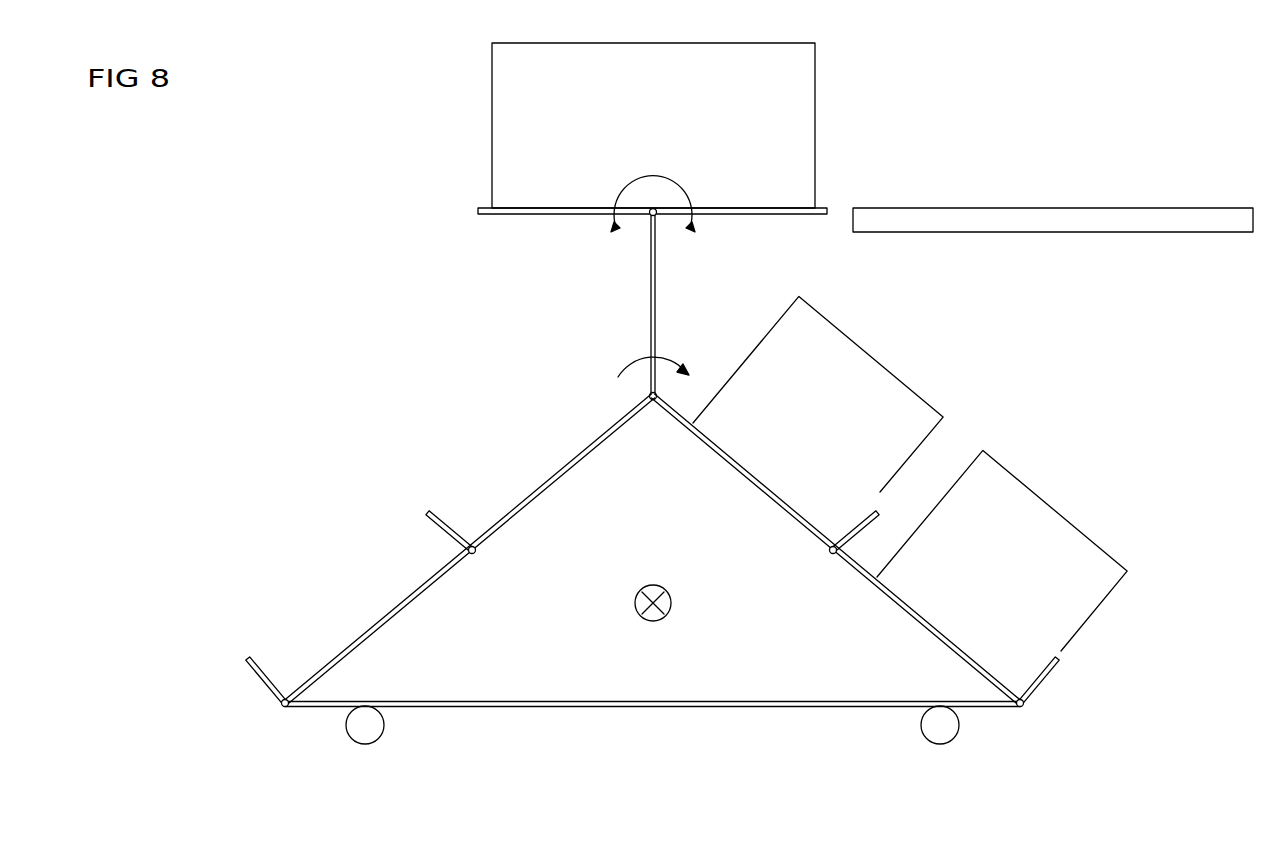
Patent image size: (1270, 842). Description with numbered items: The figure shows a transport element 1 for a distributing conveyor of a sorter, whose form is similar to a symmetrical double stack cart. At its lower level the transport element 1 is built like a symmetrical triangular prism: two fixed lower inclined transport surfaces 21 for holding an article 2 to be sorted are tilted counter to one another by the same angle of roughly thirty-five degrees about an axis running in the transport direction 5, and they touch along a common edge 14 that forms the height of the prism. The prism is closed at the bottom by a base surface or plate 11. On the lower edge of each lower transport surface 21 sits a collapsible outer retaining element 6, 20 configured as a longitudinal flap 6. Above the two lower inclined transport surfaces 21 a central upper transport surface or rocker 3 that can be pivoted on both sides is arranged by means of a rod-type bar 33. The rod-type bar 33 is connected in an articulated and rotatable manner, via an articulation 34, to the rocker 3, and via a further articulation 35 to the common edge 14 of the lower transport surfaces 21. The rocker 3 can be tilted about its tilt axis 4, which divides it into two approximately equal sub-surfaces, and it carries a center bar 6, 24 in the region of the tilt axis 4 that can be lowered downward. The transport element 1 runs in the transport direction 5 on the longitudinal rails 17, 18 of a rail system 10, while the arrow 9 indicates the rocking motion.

The transport element 1 is at (185, 204).
The article 2 is at (805, 98).
The upper transport surface 3 is at (538, 214).
The tilt axis 4 is at (608, 244).
The articulation 34 is at (648, 218).
The transport direction 5 is at (674, 598).
The flap 6 is at (653, 609).
The center bar 24 is at (447, 520).
The outer retaining element 20 is at (262, 676).
The rotation direction arrow 9 is at (677, 180).
The rail system 10 is at (652, 756).
The longitudinal rail 17 is at (365, 738).
The longitudinal rail 18 is at (942, 738).
The base surface/plate 11 is at (632, 701).
The common edge 14 is at (653, 402).
The lower transport surface 21 is at (567, 472).
The rod-type bar 33 is at (657, 302).
The articulation 35 is at (630, 362).